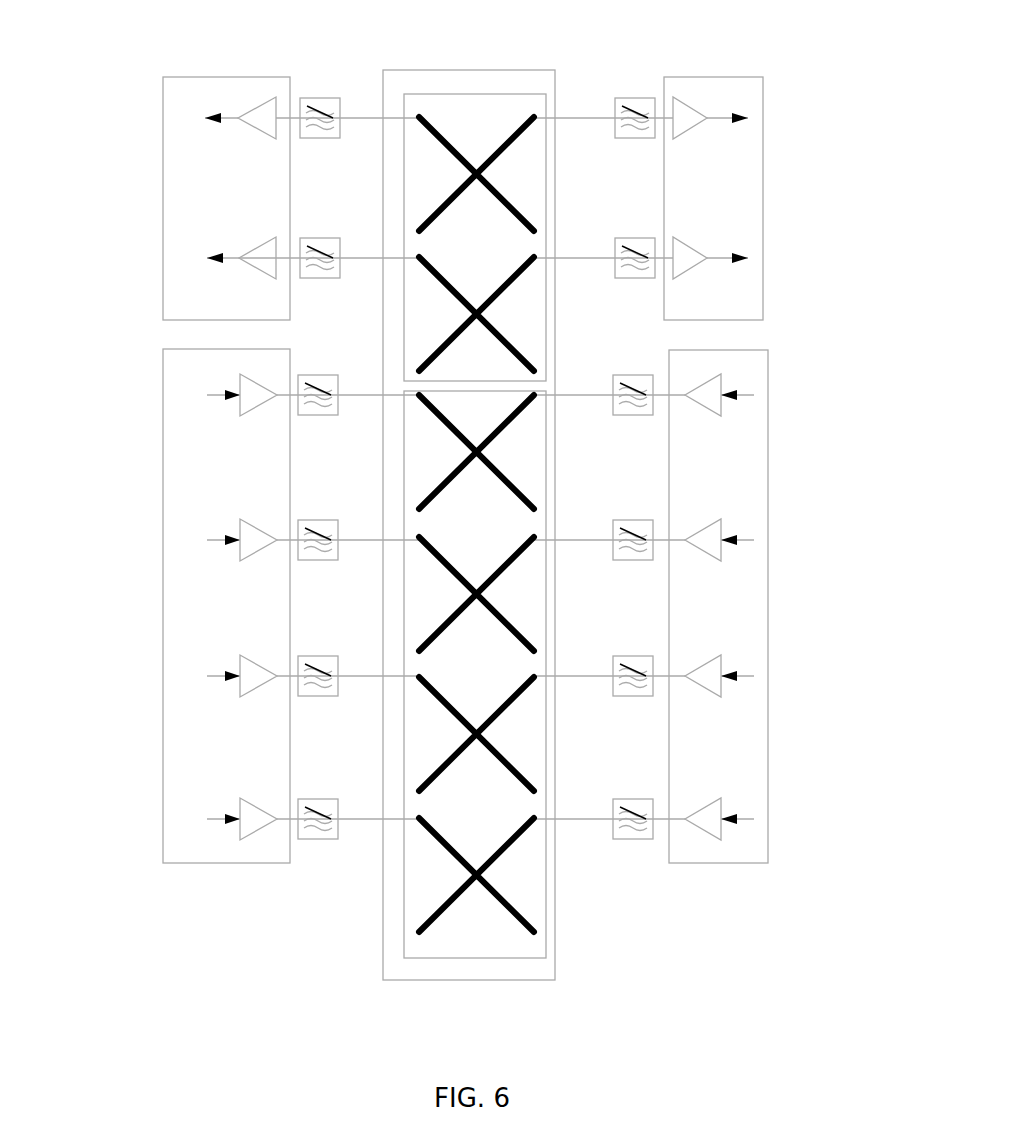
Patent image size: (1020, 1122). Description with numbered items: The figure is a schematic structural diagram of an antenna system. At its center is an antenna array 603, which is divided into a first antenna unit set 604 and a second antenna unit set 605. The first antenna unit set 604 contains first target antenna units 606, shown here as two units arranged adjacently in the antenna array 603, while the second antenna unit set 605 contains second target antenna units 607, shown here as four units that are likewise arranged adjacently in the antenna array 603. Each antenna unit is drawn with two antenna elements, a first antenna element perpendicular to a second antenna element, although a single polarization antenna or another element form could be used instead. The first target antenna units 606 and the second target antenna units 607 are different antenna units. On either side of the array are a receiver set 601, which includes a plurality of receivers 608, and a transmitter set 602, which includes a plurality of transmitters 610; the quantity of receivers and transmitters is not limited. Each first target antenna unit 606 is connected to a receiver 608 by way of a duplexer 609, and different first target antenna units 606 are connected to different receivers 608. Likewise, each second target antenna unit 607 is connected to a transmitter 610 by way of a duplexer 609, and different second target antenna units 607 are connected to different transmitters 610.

The receiver set 601 is at (456, 198).
The transmitter set 602 is at (476, 606).
The antenna array 603 is at (478, 501).
The first antenna unit set 604 is at (544, 190).
The second antenna unit set 605 is at (447, 711).
The first target antenna unit 606 is at (522, 244).
The second target antenna unit 607 is at (522, 663).
The receiver 608 is at (506, 150).
The duplexer 609 is at (482, 475).
The transmitter 610 is at (477, 626).